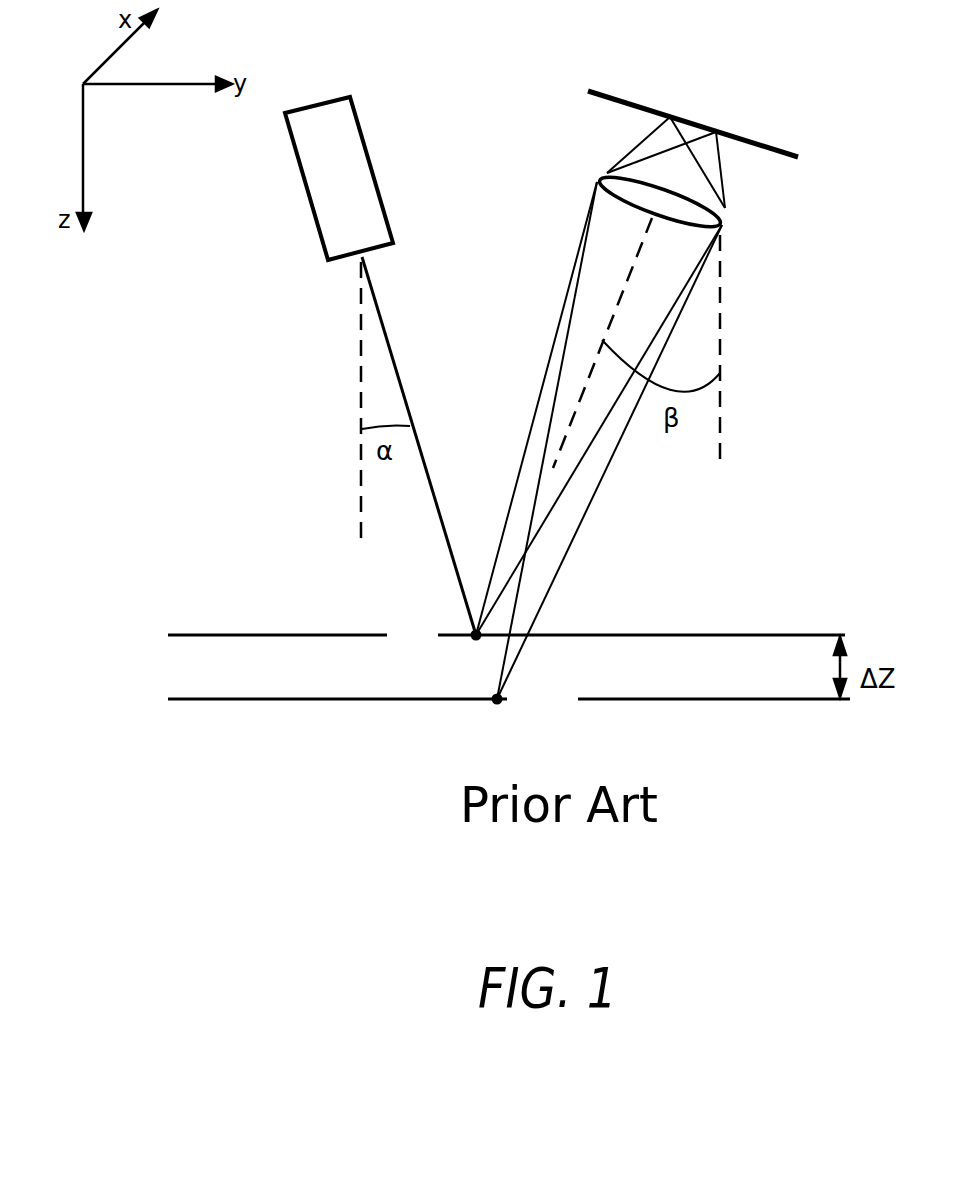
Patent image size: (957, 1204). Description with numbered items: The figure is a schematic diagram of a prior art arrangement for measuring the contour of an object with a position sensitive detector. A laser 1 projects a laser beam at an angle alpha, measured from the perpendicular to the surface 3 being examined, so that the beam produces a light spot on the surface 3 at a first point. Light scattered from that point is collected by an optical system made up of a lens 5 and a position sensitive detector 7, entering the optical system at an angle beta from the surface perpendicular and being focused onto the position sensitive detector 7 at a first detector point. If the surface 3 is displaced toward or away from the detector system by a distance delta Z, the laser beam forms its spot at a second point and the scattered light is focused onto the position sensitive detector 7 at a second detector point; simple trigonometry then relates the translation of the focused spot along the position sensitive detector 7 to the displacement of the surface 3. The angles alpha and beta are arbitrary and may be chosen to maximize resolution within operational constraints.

The laser 1 is at (322, 112).
The surface 3 is at (277, 633).
The lens 5 is at (617, 188).
The position sensitive detector (PSD) 7 is at (735, 133).